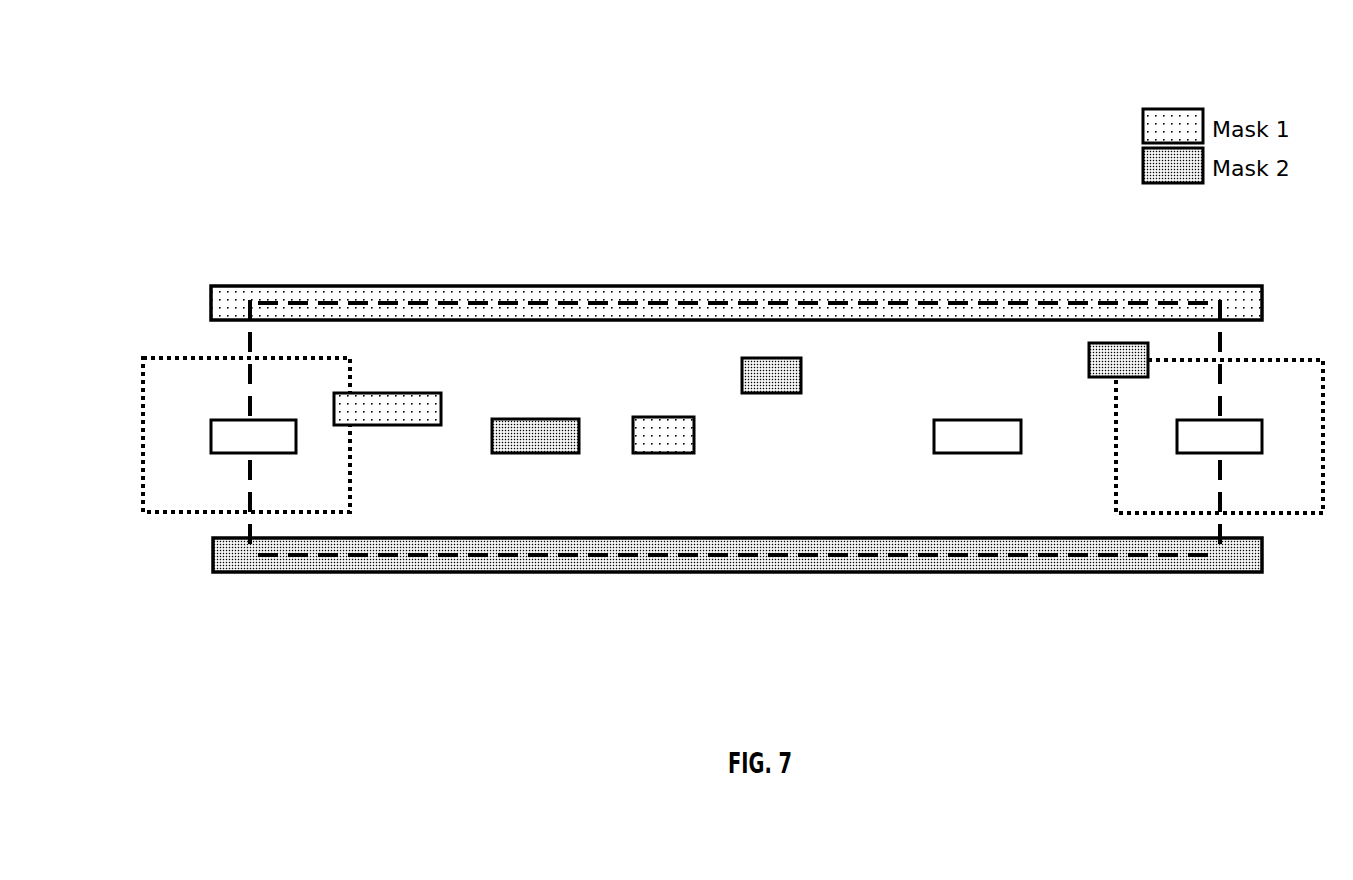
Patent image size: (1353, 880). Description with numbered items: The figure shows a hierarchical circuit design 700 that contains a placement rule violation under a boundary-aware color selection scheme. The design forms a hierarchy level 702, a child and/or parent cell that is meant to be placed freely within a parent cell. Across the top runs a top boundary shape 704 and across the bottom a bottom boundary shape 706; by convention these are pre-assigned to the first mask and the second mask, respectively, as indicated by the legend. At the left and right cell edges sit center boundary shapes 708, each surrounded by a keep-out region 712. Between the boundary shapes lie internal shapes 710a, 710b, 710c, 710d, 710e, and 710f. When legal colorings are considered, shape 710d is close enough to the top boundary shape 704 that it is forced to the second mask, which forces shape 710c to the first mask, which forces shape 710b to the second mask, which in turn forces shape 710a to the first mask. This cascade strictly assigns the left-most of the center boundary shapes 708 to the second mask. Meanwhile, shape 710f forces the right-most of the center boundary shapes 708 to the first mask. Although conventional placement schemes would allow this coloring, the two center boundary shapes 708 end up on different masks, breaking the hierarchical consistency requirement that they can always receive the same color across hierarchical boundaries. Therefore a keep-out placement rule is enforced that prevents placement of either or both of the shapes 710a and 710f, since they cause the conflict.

The hierarchical circuit design 700 is at (214, 58).
The hierarchy level 702 is at (362, 560).
The top boundary shape 704 is at (252, 286).
The bottom boundary shape 706 is at (1240, 570).
The center boundary shapes 708 is at (213, 420).
The internal shape 710a is at (397, 393).
The internal shape 710b is at (537, 453).
The internal shape 710c is at (664, 418).
The internal shape 710d is at (771, 358).
The internal shape 710e is at (951, 453).
The internal shape 710f is at (1103, 343).
The keep-out regions 712 is at (197, 513).